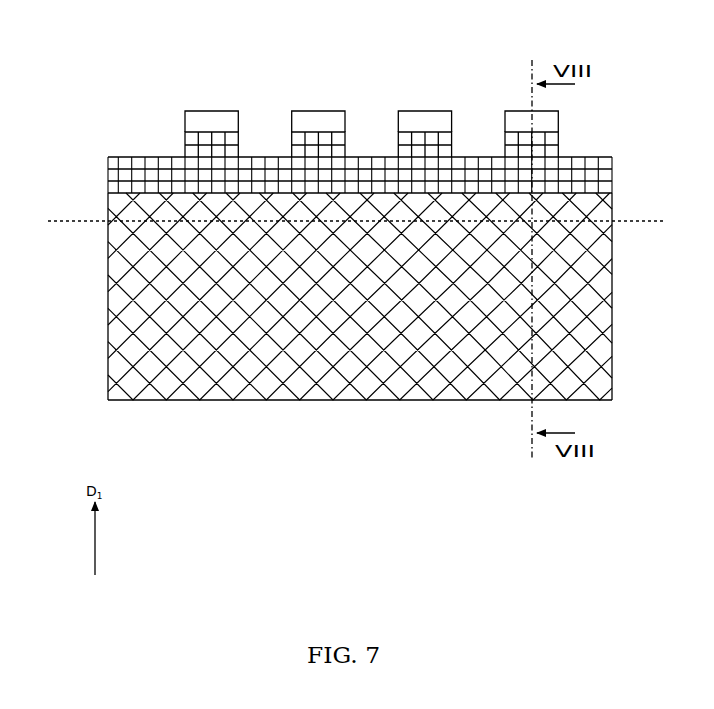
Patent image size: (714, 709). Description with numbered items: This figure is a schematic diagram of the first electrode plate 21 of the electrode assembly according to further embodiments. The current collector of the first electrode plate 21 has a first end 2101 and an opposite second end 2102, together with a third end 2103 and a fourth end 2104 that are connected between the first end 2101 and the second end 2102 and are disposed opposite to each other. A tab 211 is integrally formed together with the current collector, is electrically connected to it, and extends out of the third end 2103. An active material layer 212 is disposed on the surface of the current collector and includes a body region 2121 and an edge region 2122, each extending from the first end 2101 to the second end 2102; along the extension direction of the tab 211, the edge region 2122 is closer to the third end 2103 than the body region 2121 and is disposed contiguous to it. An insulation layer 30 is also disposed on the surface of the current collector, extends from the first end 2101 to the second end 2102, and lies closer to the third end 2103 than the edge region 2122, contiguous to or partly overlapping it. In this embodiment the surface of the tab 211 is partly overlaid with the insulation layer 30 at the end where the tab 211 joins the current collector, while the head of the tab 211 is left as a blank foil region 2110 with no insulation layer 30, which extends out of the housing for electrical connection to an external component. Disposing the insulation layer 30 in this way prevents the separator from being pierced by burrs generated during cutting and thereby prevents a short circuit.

The first electrode plate 21 is at (345, 243).
The active material layer 212 is at (85, 68).
The edge region 2122 is at (182, 170).
The body region 2121 is at (127, 303).
The insulation layer 30 is at (163, 194).
The blank foil region 2110 is at (214, 121).
The third end 2103 is at (263, 152).
The tab 211 is at (321, 121).
The first end 2101 is at (106, 305).
The second end 2102 is at (614, 306).
The fourth end 2104 is at (371, 403).